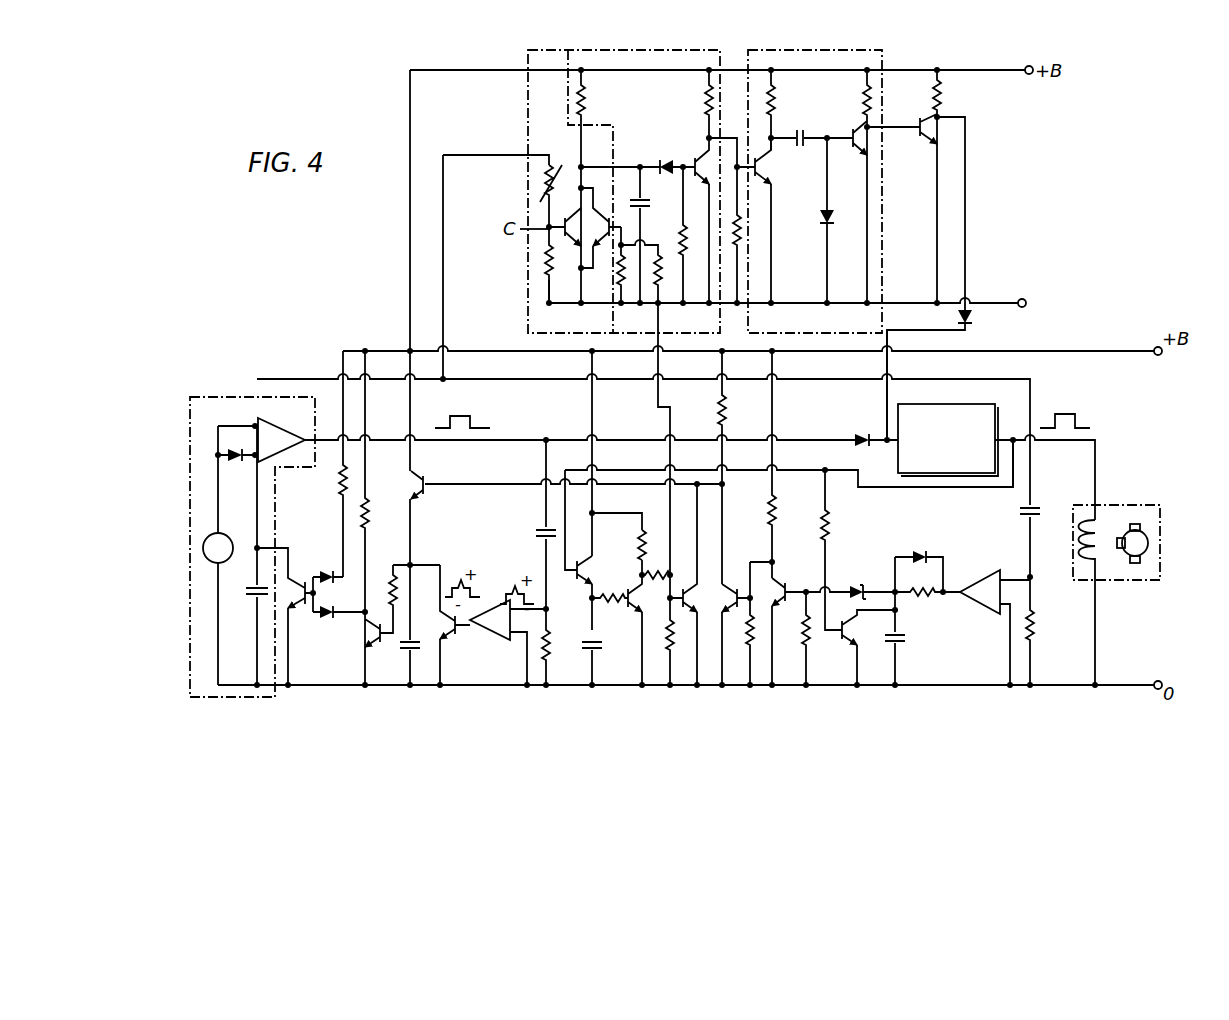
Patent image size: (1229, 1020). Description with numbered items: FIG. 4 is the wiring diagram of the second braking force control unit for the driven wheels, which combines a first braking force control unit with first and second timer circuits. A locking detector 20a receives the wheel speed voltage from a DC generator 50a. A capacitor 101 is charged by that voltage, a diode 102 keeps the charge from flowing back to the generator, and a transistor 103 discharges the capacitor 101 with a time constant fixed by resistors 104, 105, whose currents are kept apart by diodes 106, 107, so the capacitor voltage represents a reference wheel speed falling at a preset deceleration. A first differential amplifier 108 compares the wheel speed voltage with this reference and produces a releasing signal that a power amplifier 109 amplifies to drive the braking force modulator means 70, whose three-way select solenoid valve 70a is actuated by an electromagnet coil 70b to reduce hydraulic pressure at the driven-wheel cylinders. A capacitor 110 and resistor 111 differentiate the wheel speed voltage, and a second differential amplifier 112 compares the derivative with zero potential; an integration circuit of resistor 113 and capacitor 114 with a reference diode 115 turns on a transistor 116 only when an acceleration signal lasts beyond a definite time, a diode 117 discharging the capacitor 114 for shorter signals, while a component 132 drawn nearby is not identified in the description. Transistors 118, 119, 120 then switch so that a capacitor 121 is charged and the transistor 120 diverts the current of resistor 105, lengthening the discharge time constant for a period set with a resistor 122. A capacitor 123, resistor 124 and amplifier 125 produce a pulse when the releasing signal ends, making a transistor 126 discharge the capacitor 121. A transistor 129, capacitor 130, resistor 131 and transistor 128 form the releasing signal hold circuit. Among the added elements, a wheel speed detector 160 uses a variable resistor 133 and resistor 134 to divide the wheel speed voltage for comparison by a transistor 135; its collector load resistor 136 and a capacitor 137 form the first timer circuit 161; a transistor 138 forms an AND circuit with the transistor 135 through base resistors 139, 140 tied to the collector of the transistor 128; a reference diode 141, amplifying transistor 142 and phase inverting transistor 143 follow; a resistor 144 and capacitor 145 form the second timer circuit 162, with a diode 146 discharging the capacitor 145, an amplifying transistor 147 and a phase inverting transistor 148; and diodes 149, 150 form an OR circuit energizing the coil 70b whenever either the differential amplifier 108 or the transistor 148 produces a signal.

The wheel speed detector 160 is at (528, 66).
The first timer circuit 161 is at (602, 50).
The second timer circuit 162 is at (756, 50).
The variable resistor 133 is at (541, 186).
The resistor 134 is at (541, 283).
The transistor 135 is at (551, 307).
The collector load resistor 136 is at (585, 106).
The capacitor 137 is at (637, 198).
The transistor 138 is at (612, 290).
The base resistor 139 is at (683, 288).
The base resistor 140 is at (652, 290).
The reference diode 141 is at (667, 160).
The amplifying transistor 142 is at (706, 150).
The phase inverting transistor 143 is at (768, 176).
The resistor 144 is at (779, 106).
The capacitor 145 is at (796, 132).
The diode 146 is at (822, 222).
The amplifying transistor 147 is at (870, 149).
The phase inverting transistor 148 is at (950, 128).
The diode 149 is at (973, 319).
The locking detector 20a is at (190, 397).
The DC generator 50a is at (203, 548).
The first differential amplifier 108 is at (292, 421).
The capacitor 101 is at (256, 598).
The diode 102 is at (235, 462).
The transistor 103 is at (300, 605).
The resistor 104 is at (338, 488).
The resistor 105 is at (418, 494).
The diode 106 is at (332, 571).
The diode 107 is at (342, 620).
The transistor 119 is at (411, 500).
The transistor 120 is at (380, 648).
The capacitor 121 is at (420, 652).
The resistor 122 is at (391, 580).
The capacitor 123 is at (540, 532).
The resistor 124 is at (550, 640).
The amplifier 125 is at (490, 642).
The transistor 126 is at (452, 634).
The transistor 128 is at (640, 605).
The transistor 129 is at (583, 582).
The capacitor 130 is at (600, 649).
The resistor 131 is at (600, 594).
The transistor 118 is at (740, 596).
The transistor 116 is at (800, 570).
The reference diode 115 is at (857, 586).
The diode 117 is at (920, 551).
The transistor 132 is at (843, 639).
The resistor 113 is at (928, 599).
The capacitor 114 is at (906, 640).
The second differential amplifier 112 is at (976, 612).
The resistor 111 is at (1038, 624).
The capacitor 110 is at (1044, 508).
The power amplifier 109 is at (970, 404).
The diode 150 is at (858, 434).
The braking force modulator means 70 is at (1160, 510).
The three-way select solenoid valve 70a is at (1132, 524).
The electromagnet coil 70b is at (1098, 562).